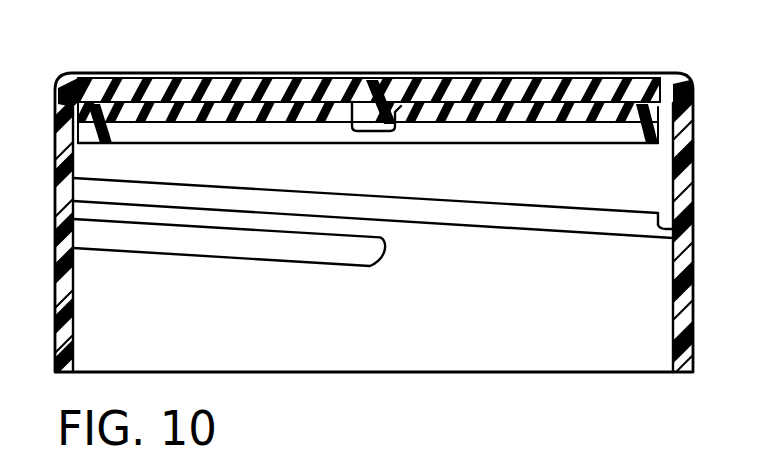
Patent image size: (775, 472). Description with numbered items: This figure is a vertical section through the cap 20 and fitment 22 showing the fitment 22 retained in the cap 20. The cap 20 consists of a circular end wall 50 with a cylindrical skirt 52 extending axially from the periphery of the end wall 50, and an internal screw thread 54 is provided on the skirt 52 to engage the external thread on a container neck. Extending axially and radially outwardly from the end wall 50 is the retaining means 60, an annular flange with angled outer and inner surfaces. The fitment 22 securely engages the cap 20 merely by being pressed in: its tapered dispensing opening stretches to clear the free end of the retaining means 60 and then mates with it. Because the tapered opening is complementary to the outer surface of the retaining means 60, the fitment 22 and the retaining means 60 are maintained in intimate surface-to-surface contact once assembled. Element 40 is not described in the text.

The cap 20 is at (700, 88).
The fitment 22 is at (541, 137).
The retaining bead 40 is at (86, 122).
The end wall 50 is at (662, 68).
The skirt 52 is at (693, 293).
The internal screw thread 54 is at (90, 233).
The retaining means 60 is at (378, 130).